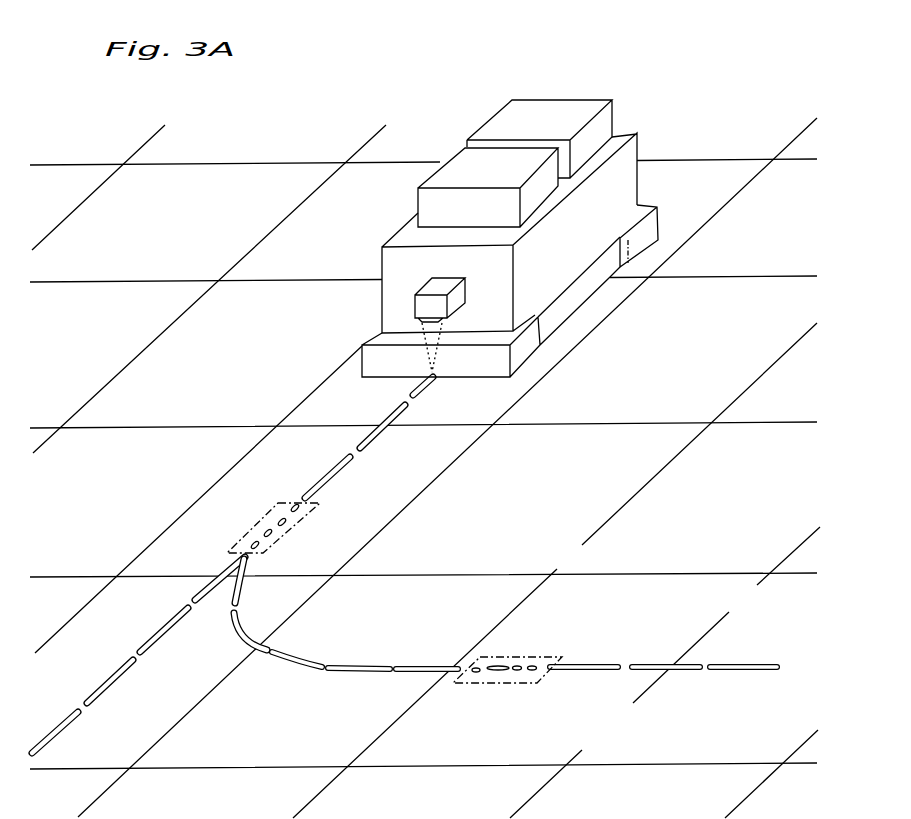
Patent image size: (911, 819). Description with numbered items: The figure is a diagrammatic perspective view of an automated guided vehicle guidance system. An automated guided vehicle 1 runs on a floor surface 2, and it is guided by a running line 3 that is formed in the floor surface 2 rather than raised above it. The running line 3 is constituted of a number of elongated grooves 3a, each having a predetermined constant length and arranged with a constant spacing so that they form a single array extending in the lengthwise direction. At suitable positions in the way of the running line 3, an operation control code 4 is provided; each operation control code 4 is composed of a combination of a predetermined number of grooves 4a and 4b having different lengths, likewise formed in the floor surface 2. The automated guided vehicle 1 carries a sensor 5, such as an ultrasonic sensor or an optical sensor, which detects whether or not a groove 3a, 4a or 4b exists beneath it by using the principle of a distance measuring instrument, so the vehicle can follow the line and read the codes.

The automated guided vehicle 1 is at (623, 184).
The floor surface 2 is at (262, 143).
The running line 3 is at (340, 478).
The elongated groove 3a is at (380, 430).
The operation control code 4 is at (305, 530).
The groove 4a is at (500, 682).
The groove 4b is at (465, 682).
The sensor 5 is at (455, 300).